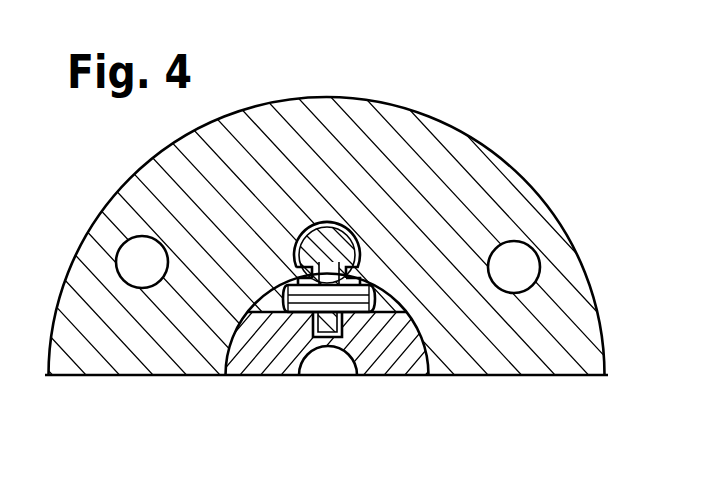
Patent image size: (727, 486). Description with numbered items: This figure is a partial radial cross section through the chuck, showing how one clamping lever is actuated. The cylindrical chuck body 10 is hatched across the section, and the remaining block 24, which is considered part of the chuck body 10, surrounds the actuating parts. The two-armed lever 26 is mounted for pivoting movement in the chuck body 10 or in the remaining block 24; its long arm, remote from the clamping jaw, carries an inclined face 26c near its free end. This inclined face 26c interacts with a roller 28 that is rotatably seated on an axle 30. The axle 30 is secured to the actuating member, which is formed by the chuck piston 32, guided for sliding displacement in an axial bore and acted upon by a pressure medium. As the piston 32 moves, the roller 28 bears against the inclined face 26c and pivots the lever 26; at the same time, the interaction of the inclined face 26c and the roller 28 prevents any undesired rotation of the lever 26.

The chuck body 10 is at (363, 243).
The remaining block 24 is at (452, 148).
The two-armed lever 26 is at (273, 221).
The inclined face 26c is at (362, 280).
The roller 28 is at (328, 333).
The axle 30 is at (357, 300).
The chuck piston 32 is at (257, 357).